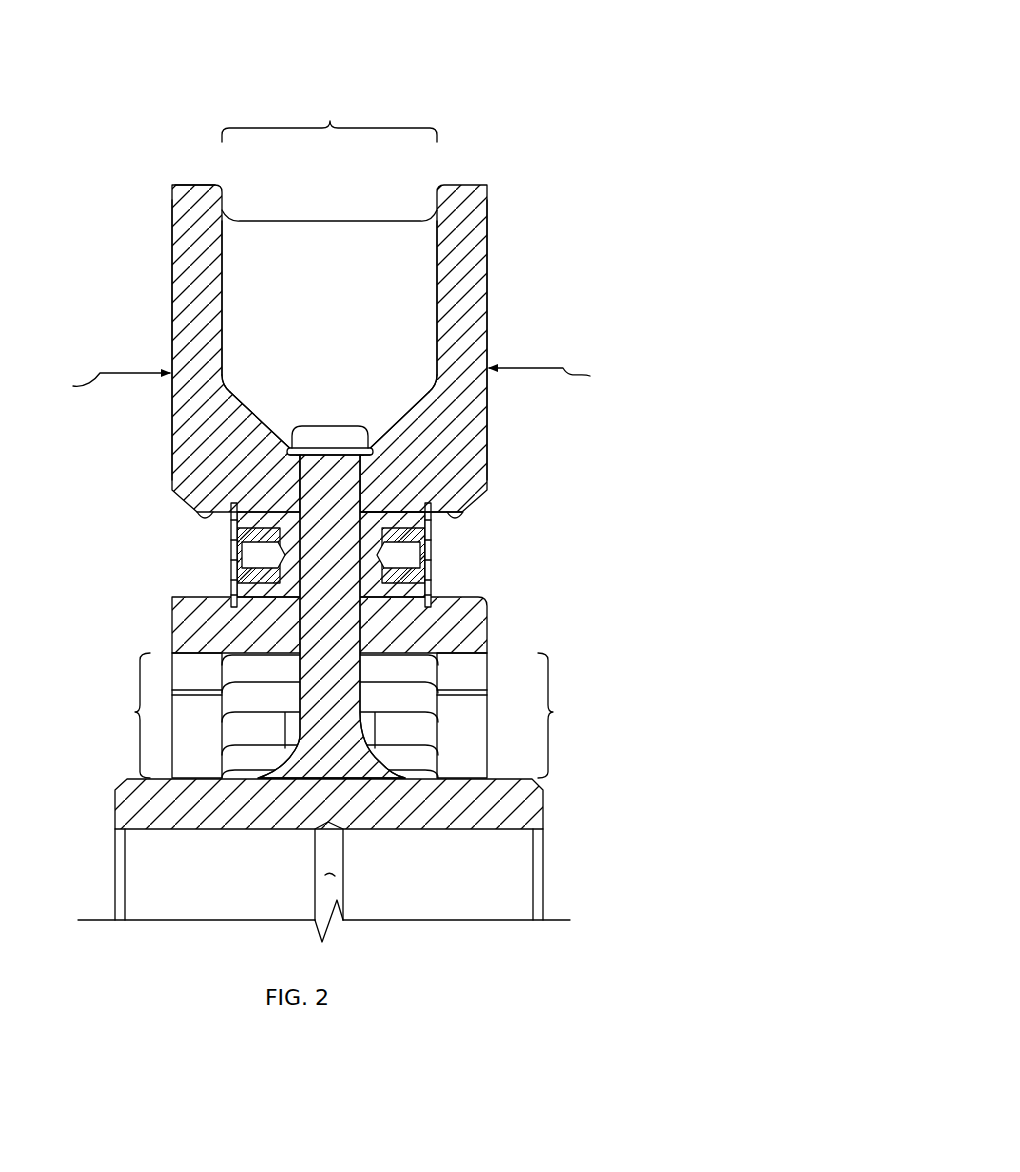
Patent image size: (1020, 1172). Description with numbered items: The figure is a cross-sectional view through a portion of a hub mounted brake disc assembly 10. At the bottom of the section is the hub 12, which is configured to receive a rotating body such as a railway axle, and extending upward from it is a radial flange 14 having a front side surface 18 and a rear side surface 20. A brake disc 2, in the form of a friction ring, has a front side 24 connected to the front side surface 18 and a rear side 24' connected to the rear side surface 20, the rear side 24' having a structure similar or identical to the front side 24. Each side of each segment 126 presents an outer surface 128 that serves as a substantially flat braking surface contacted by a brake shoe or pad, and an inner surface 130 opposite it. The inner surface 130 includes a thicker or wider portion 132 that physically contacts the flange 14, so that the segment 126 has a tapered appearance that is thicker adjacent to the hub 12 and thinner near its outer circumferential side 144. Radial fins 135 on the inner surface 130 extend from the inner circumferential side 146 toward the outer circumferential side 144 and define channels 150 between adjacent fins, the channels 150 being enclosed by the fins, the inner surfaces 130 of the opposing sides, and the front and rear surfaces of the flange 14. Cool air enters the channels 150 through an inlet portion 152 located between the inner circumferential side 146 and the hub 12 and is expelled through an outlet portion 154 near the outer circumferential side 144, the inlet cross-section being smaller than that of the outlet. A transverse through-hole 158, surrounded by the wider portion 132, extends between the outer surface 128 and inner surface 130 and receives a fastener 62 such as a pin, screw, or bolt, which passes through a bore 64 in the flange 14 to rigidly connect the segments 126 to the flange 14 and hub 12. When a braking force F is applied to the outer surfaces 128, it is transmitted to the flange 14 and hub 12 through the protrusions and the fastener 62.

The hub mounted brake disc assembly 10 is at (610, 61).
The brake disc 2 is at (492, 165).
The hub 12 is at (530, 803).
The radial flange 14 is at (343, 733).
The front side surface 18 is at (300, 663).
The rear side surface 20 is at (363, 627).
The front side 24 is at (318, 316).
The rear side 24' is at (461, 348).
The fastener 62 is at (357, 583).
The bore 64 is at (440, 497).
The segment 126 is at (185, 347).
The outer surface 128 is at (172, 292).
The inner surface 130 is at (222, 360).
The wider portion 132 is at (192, 443).
The radial fins 135 is at (265, 218).
The outer circumferential side 144 is at (186, 185).
The inner circumferential side 146 is at (192, 656).
The channels 150 is at (352, 304).
The inlet portion 152 is at (341, 715).
The outlet portion 154 is at (329, 118).
The transverse through-hole 158 is at (204, 513).
The braking force F is at (333, 384).